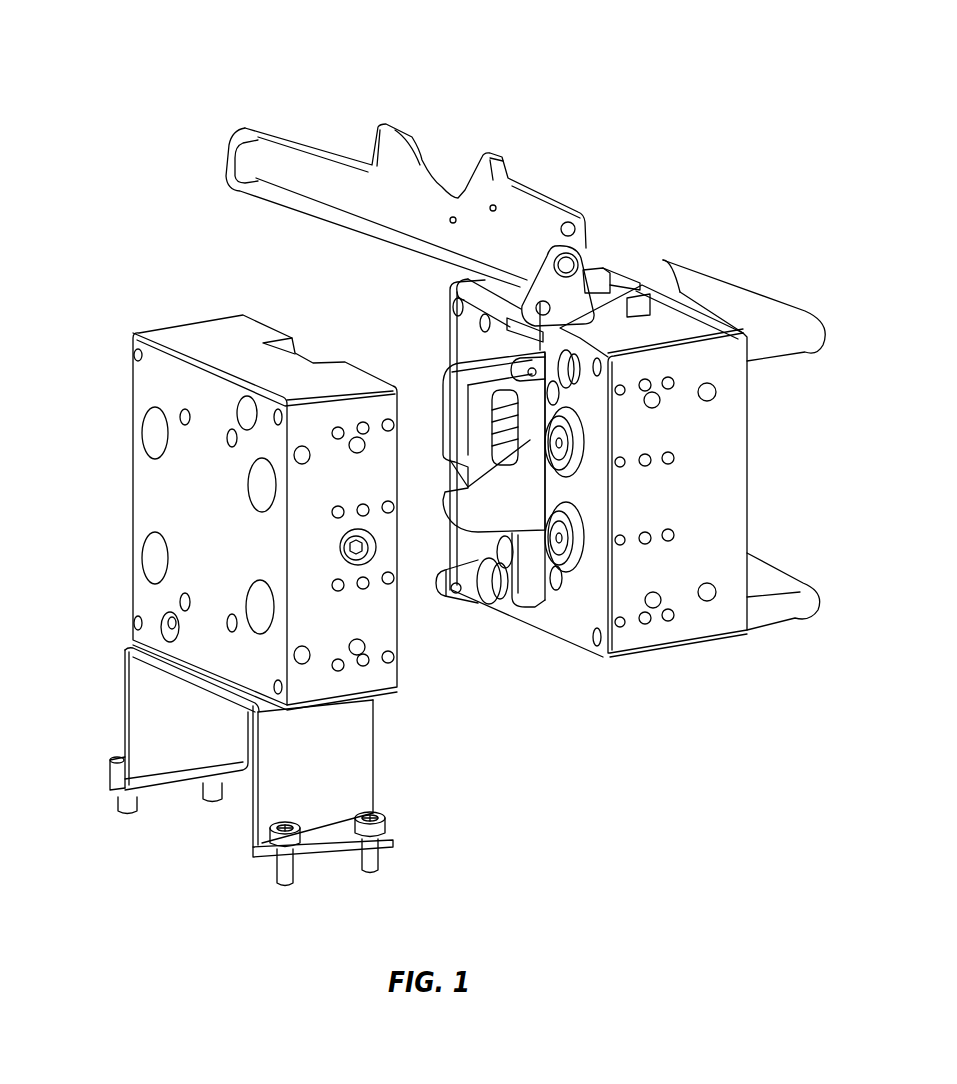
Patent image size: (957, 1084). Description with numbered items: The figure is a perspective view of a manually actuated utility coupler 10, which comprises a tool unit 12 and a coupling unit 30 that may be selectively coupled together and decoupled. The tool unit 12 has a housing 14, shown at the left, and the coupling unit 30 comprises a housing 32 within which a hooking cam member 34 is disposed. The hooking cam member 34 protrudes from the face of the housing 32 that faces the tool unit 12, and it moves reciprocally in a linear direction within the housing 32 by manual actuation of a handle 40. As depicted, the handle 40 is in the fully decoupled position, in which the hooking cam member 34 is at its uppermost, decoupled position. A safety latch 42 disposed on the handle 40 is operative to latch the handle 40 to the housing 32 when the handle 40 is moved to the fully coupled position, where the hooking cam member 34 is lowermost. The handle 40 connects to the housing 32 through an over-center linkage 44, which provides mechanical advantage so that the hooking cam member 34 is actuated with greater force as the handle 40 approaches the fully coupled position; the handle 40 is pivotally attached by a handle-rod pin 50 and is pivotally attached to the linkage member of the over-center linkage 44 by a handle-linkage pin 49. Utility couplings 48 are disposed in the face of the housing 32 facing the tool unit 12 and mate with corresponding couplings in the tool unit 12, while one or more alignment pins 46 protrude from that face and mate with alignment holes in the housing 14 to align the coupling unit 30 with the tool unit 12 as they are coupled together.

The utility coupler 10 is at (267, 71).
The tool unit 12 is at (101, 494).
The housing 14 is at (212, 335).
The coupling unit 30 is at (782, 487).
The housing 32 is at (712, 432).
The hooking cam member 34 is at (527, 511).
The handle 40 is at (302, 173).
The safety latch 42 is at (503, 172).
The over-center linkage 44 is at (597, 245).
The alignment pin 46 is at (470, 583).
The utility couplings 48 is at (557, 568).
The handle-linkage pin 49 is at (580, 215).
The handle-rod pin 50 is at (578, 262).